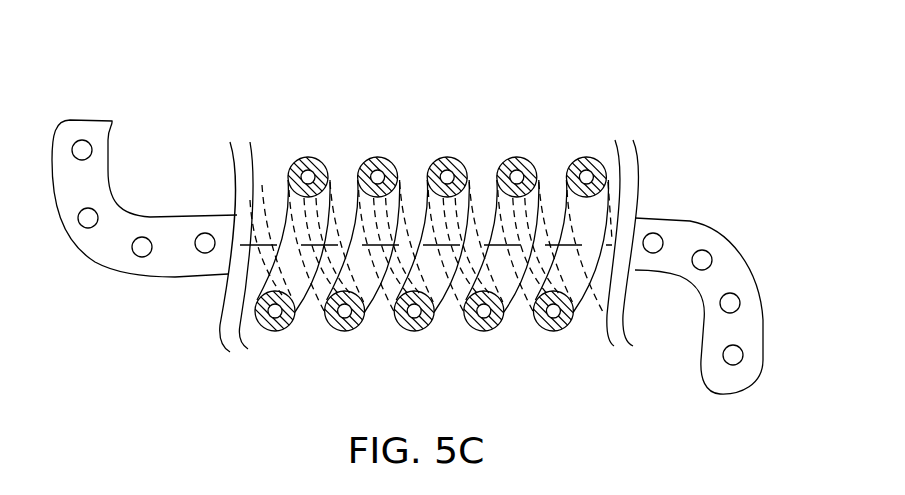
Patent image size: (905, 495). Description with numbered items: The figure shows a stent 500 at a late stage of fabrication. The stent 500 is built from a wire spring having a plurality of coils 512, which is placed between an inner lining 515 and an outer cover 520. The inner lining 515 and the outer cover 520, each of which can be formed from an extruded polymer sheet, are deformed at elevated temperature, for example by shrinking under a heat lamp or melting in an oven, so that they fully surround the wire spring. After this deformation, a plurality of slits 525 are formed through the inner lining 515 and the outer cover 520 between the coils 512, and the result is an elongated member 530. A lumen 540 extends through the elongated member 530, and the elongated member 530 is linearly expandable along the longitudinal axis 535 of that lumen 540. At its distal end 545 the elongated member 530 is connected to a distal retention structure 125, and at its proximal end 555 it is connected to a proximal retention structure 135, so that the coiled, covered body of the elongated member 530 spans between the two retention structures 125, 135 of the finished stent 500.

The stent 500 is at (178, 78).
The elongated member 530 is at (447, 84).
The proximal retention structure 135 is at (118, 125).
The distal retention structure 125 is at (722, 240).
The proximal end 555 is at (251, 141).
The distal end 545 is at (610, 343).
The longitudinal axis 535 is at (278, 180).
The slits 525 is at (343, 180).
The coils 512 is at (307, 305).
The inner lining 515 is at (563, 178).
The outer cover 520 is at (587, 157).
The lumen 540 is at (577, 328).